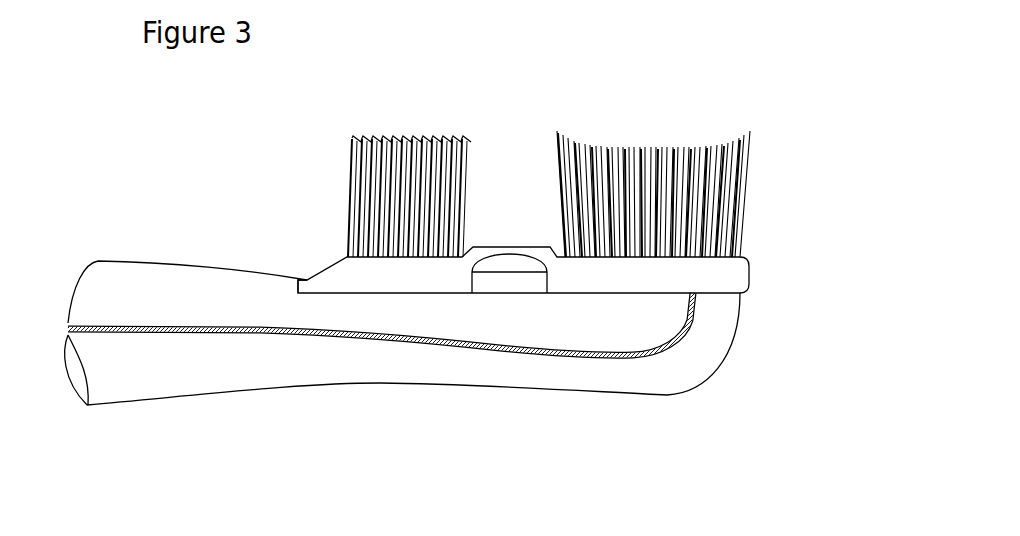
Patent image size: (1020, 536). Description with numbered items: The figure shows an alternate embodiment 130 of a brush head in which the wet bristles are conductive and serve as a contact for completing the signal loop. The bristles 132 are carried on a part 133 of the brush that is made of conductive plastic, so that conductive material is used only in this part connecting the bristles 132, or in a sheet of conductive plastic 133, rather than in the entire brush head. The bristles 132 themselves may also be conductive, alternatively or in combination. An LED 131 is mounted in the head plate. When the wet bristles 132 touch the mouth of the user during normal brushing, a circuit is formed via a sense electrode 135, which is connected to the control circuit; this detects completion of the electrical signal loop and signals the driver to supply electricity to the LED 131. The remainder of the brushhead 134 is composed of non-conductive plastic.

The alternate embodiment 130 is at (233, 198).
The LED 131 is at (517, 263).
The bristles 132 is at (347, 158).
The part of the brush connecting the bristles 133 is at (740, 273).
The remainder of the brushhead 134 is at (543, 377).
The sense electrode 135 is at (265, 332).